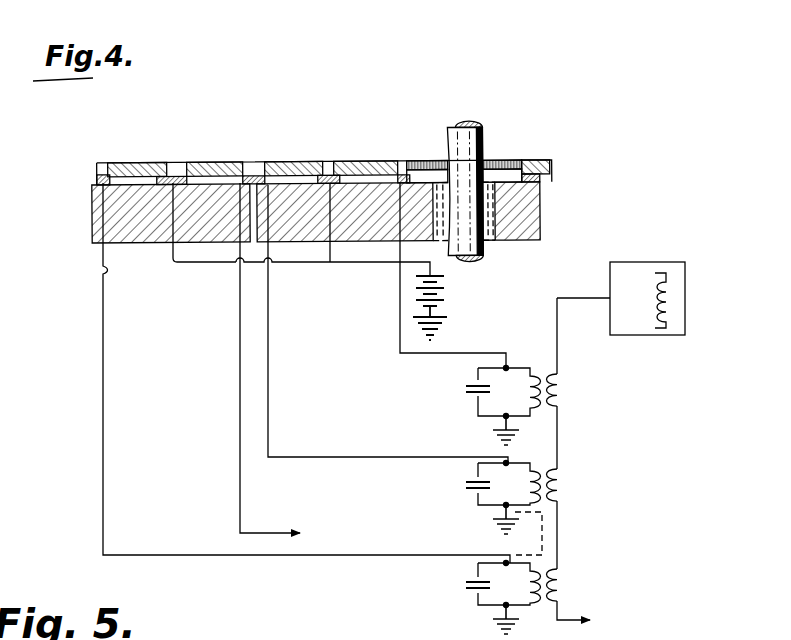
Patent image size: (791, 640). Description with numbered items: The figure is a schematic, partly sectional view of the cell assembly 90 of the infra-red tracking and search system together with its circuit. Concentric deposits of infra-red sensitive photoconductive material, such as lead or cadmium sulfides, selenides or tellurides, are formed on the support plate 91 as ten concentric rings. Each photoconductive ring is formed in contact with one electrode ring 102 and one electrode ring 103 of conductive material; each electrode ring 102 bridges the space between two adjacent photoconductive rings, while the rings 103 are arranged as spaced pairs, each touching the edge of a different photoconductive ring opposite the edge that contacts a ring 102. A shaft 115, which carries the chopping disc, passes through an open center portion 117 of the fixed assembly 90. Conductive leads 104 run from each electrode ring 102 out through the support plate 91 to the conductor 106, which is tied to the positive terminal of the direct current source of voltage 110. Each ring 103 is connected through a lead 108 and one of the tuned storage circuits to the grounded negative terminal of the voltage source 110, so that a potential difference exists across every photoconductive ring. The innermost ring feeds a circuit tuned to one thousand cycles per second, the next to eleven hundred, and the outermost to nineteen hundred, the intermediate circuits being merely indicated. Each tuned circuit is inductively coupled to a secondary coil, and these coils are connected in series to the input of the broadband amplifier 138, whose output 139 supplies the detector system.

The cell assembly 90 is at (556, 181).
The support plate 91 is at (92, 215).
The electrode ring 102 is at (173, 177).
The electrode ring 103 is at (97, 181).
The conductive lead 104 is at (178, 264).
The conductor 106 is at (312, 263).
The lead 108 is at (103, 362).
The direct current source of voltage 110 is at (443, 301).
The shaft 115 is at (481, 133).
The open center portion 117 is at (487, 244).
The broadband amplifier 138 is at (652, 336).
The output 139 is at (665, 262).